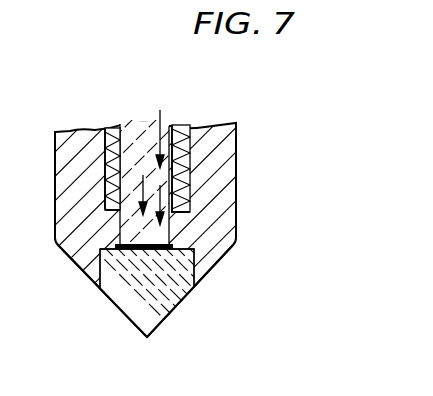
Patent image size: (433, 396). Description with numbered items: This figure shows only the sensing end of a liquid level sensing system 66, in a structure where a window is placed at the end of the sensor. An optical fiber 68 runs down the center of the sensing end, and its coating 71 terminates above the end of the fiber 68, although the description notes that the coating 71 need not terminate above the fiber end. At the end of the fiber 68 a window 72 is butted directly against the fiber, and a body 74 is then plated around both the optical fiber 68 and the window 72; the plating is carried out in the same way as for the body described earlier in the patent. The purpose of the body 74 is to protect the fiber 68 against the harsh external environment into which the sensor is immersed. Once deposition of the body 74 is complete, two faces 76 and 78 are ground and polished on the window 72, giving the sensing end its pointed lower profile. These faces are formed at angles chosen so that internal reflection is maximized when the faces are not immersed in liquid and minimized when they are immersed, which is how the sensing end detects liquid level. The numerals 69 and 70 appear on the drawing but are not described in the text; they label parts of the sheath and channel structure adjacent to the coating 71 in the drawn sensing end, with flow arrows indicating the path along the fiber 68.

The liquid level sensing system 66 is at (248, 140).
The optical fiber 68 is at (150, 113).
The first tube wall 69 is at (130, 124).
The central bore 70 is at (183, 112).
The coating 71 is at (186, 126).
The window 72 is at (174, 297).
The body 74 is at (237, 187).
The face 76 is at (117, 312).
The face 78 is at (163, 323).